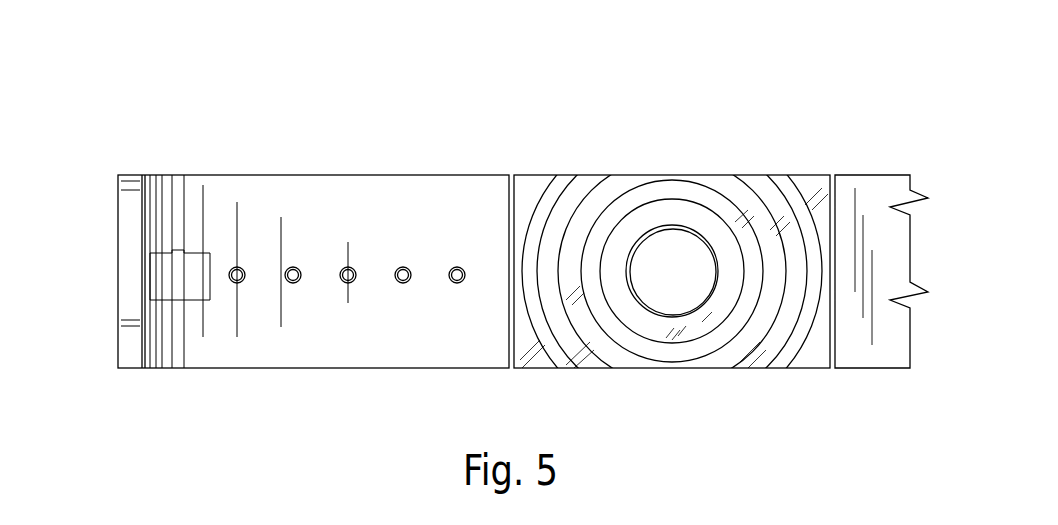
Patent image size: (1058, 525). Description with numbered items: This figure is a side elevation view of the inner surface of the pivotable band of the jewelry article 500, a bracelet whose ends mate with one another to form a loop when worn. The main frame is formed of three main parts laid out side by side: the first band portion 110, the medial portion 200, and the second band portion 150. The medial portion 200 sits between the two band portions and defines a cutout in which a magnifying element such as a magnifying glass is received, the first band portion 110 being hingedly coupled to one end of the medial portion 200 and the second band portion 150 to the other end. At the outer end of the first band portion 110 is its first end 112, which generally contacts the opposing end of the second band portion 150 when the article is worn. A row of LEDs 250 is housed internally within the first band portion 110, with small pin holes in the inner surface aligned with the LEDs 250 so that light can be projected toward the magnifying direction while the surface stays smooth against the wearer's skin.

The jewelry article 500 is at (737, 57).
The first band portion 110 is at (428, 200).
The first end of first band portion 112 is at (118, 298).
The LEDs 250 is at (342, 265).
The medial portion 200 is at (648, 218).
The second band portion 150 is at (873, 173).